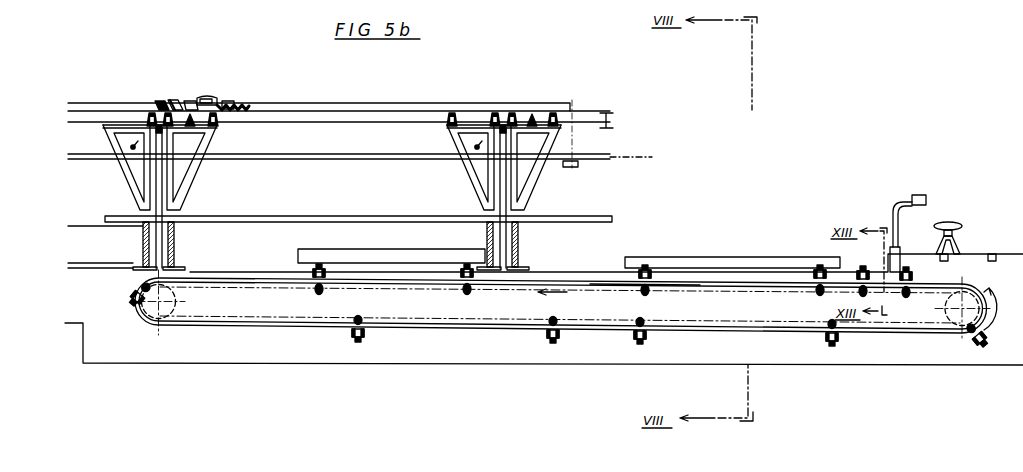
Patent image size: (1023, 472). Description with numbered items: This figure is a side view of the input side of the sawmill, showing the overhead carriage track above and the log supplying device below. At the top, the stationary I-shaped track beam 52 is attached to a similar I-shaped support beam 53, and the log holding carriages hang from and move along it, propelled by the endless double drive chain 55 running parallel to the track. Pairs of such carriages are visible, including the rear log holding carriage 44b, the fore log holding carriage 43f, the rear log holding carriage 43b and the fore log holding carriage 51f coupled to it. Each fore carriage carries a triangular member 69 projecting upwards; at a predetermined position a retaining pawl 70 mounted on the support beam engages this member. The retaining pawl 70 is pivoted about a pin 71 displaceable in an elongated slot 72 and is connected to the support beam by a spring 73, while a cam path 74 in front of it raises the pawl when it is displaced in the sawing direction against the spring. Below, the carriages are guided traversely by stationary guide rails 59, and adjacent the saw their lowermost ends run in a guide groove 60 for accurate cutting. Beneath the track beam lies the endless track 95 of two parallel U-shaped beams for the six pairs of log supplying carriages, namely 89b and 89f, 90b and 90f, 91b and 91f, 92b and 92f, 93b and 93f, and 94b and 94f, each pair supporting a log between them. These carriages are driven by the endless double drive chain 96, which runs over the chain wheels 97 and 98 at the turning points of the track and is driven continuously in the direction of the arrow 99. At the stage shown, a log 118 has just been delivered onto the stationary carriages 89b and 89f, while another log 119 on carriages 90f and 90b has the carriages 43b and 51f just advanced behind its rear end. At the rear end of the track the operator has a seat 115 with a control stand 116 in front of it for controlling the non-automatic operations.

The support beam 53 is at (80, 103).
The track beam 52 is at (87, 122).
The drive chain 55 is at (70, 155).
The cam path 74 is at (160, 101).
The triangular member 69 is at (176, 100).
The retaining pawl 70 is at (191, 101).
The elongated slot 72 is at (213, 90).
The pin 71 is at (229, 101).
The spring 73 is at (241, 104).
The rear log holding carriage 44b is at (126, 173).
The fore log holding carriage 43f is at (190, 174).
The rear log holding carriage 43b is at (471, 176).
The fore log holding carriage 51f is at (528, 178).
The guide rail 59 is at (290, 217).
The guide groove 60 is at (99, 269).
The track 95 is at (584, 279).
The chain wheel 97 is at (178, 302).
The chain wheel 98 is at (949, 306).
The arrow 99 is at (553, 294).
The drive chain 96 is at (608, 289).
The fore log supplying carriage 90f is at (320, 263).
The rear log supplying carriage 90b is at (468, 263).
The log 119 is at (414, 256).
The fore log supplying carriage 89f is at (660, 250).
The rear log supplying carriage 89b is at (820, 264).
The log 118 is at (763, 262).
The fore log supplying carriage 94f is at (870, 258).
The rear log supplying carriage 94b is at (910, 270).
The fore log supplying carriage 91f is at (362, 340).
The rear log supplying carriage 91b is at (128, 293).
The rear log supplying carriage 92b is at (552, 341).
The fore log supplying carriage 92f is at (641, 341).
The rear log supplying carriage 93b is at (834, 342).
The fore log supplying carriage 93f is at (982, 343).
The control stand 116 is at (916, 195).
The seat 115 is at (960, 222).